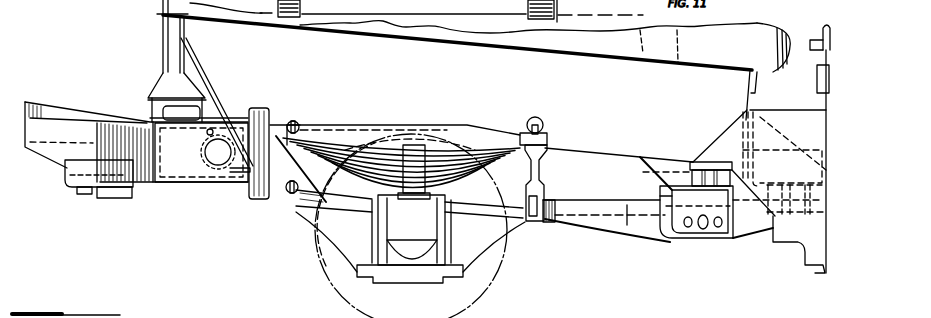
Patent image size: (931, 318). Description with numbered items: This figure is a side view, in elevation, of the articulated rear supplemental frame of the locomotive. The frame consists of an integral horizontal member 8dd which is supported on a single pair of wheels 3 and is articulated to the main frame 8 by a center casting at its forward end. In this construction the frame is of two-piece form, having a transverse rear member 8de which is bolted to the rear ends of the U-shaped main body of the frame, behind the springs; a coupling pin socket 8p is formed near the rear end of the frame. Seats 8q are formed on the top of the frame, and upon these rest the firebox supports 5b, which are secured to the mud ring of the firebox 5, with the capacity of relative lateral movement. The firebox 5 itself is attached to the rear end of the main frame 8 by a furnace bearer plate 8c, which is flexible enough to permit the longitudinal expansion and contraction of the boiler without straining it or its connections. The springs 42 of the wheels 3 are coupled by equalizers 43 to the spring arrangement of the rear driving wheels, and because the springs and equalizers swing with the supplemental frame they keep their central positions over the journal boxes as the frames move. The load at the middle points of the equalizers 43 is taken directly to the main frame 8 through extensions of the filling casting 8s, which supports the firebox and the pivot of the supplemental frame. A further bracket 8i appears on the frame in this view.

The firebox supports 5b is at (176, 70).
The seats 8q is at (186, 103).
The coupling pin socket 8p is at (113, 140).
The transverse rear member 8de is at (184, 160).
The springs 42 is at (373, 165).
The firebox 5 is at (598, 52).
The integral horizontal member 8dd is at (608, 162).
The equalizers 43 is at (600, 212).
The bracket box 8i is at (663, 184).
The filling casting 8s is at (742, 147).
The furnace bearer plate 8c is at (748, 105).
The wheels 3 is at (496, 254).
The main frame 8 is at (800, 232).